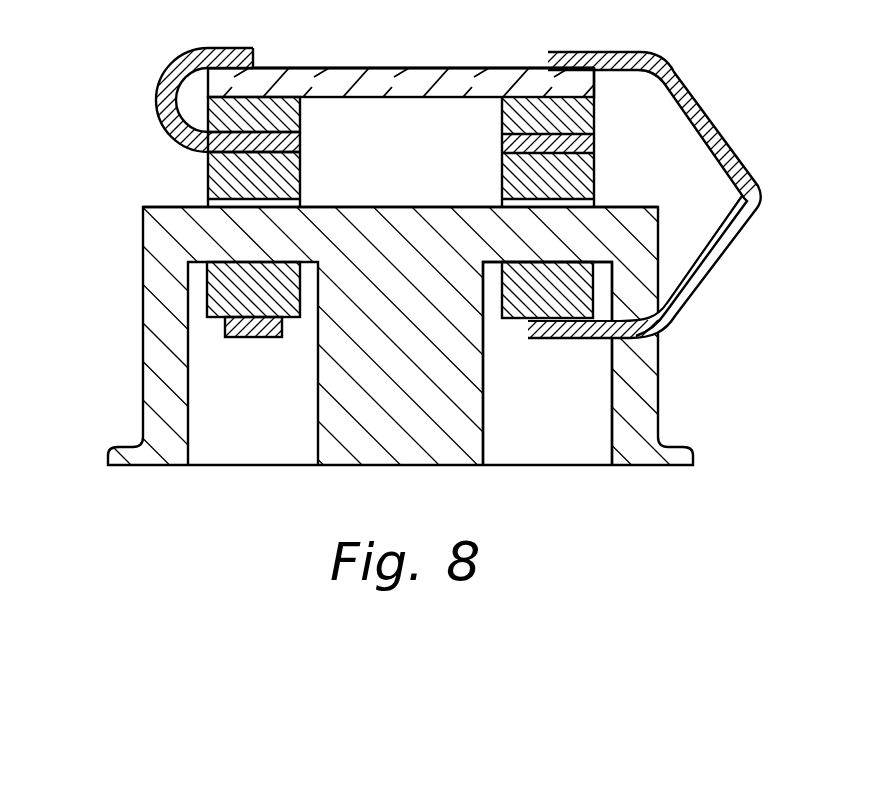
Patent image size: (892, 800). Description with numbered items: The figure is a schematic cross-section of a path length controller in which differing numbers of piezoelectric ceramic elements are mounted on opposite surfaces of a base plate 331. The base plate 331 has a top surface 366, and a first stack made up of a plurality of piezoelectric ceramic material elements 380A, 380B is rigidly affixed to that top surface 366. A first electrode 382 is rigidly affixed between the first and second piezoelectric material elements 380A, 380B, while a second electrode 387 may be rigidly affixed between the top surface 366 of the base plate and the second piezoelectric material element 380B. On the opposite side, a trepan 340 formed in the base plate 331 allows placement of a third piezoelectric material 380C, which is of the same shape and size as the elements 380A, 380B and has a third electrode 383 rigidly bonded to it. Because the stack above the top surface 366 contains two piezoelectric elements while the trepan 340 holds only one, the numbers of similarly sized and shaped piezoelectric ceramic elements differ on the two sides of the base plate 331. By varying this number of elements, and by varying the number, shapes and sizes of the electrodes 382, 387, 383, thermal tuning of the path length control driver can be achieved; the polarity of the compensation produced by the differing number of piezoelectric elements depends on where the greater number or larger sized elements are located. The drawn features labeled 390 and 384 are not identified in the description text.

The base plate 331 is at (143, 262).
The top surface 366 is at (163, 207).
The trepan 340 is at (572, 436).
The top plate 390 is at (456, 69).
The first electrode 382 is at (157, 105).
The first piezoelectric material element 380A is at (300, 120).
The second piezoelectric material element 380B is at (300, 182).
The second electrode 387 is at (597, 207).
The third electrode 383 is at (238, 338).
The third piezoelectric material 380C is at (510, 320).
The diagonal strip 384 is at (730, 147).